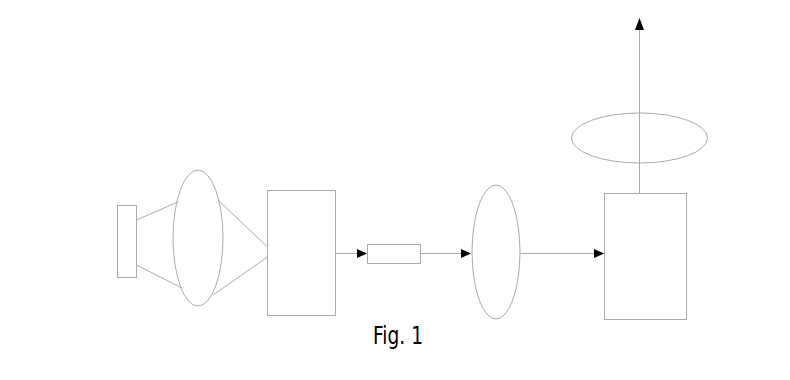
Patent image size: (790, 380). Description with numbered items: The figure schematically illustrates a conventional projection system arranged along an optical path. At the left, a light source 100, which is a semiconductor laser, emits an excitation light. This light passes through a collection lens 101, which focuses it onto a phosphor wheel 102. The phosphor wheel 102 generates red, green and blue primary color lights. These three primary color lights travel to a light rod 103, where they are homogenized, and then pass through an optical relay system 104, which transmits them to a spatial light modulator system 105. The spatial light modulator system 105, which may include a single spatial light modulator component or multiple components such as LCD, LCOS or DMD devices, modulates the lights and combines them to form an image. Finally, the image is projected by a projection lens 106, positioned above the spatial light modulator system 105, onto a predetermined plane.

The light source 100 is at (122, 213).
The collection lens 101 is at (203, 183).
The phosphor wheel 102 is at (302, 193).
The light rod 103 is at (383, 248).
The optical relay system 104 is at (493, 187).
The spatial light modulator system 105 is at (673, 292).
The projection lens 106 is at (585, 135).